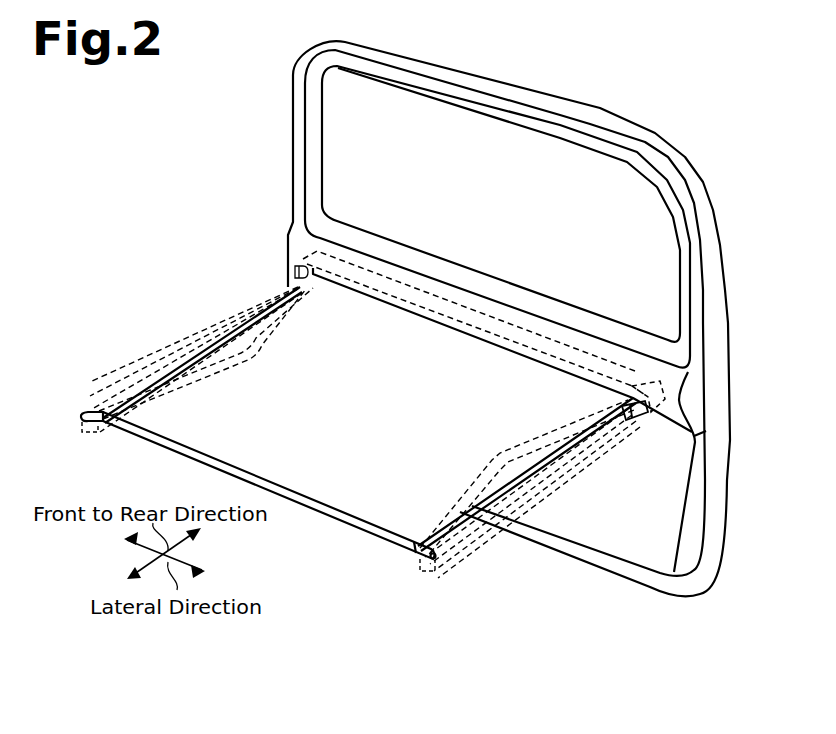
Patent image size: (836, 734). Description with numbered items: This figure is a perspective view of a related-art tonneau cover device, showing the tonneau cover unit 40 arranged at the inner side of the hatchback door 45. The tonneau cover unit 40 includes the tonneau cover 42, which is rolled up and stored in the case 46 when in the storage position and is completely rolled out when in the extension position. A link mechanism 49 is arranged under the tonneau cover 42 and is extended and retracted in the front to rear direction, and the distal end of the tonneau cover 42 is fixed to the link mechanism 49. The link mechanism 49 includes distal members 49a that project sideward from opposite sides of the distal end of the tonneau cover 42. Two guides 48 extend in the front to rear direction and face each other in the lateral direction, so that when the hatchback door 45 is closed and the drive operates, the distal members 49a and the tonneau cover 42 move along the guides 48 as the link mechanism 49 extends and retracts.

The tonneau cover unit 40 is at (343, 451).
The tonneau cover 42 is at (386, 527).
The hatchback door 45 is at (699, 174).
The case 46 is at (666, 395).
The guides 48 is at (121, 392).
The link mechanism 49 is at (176, 386).
The distal members 49a is at (82, 413).